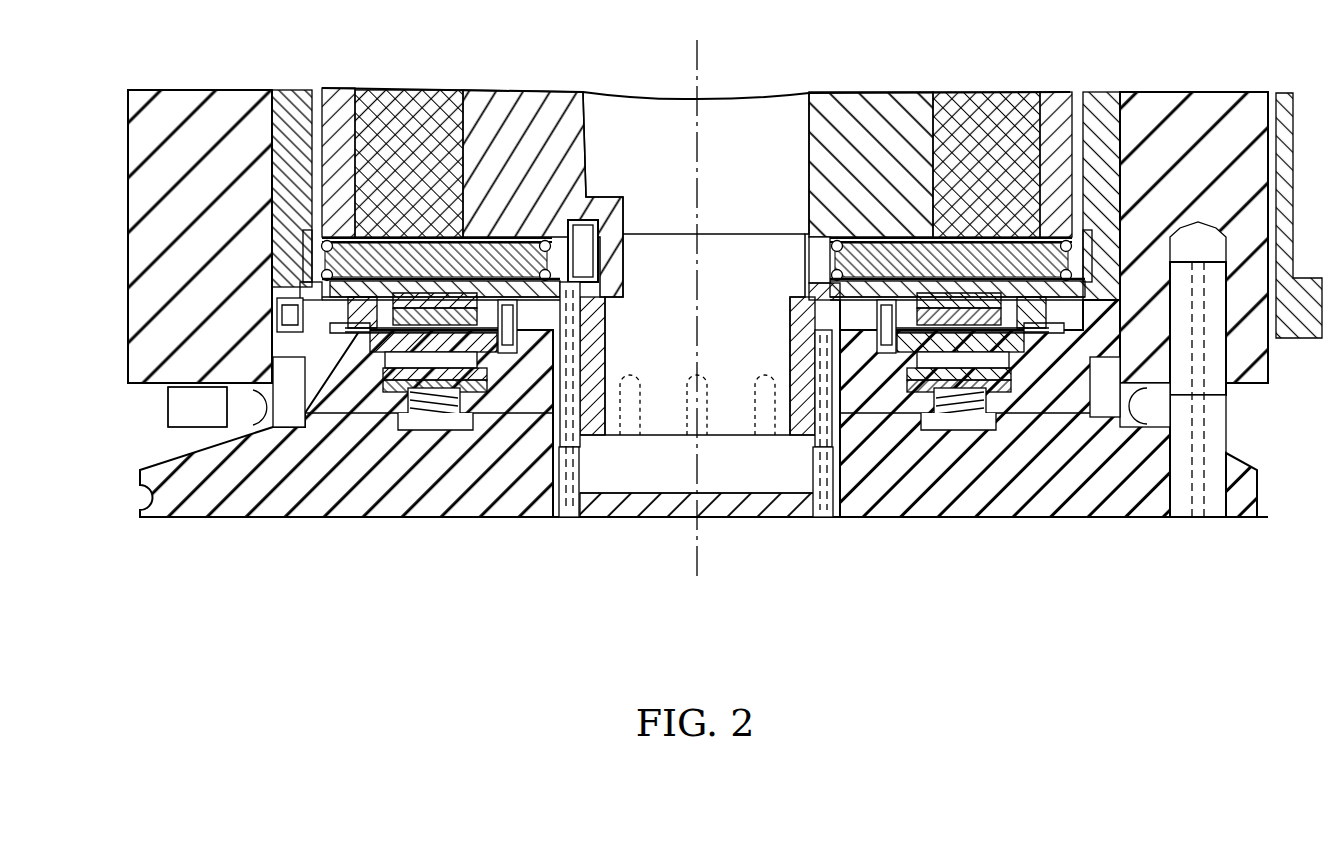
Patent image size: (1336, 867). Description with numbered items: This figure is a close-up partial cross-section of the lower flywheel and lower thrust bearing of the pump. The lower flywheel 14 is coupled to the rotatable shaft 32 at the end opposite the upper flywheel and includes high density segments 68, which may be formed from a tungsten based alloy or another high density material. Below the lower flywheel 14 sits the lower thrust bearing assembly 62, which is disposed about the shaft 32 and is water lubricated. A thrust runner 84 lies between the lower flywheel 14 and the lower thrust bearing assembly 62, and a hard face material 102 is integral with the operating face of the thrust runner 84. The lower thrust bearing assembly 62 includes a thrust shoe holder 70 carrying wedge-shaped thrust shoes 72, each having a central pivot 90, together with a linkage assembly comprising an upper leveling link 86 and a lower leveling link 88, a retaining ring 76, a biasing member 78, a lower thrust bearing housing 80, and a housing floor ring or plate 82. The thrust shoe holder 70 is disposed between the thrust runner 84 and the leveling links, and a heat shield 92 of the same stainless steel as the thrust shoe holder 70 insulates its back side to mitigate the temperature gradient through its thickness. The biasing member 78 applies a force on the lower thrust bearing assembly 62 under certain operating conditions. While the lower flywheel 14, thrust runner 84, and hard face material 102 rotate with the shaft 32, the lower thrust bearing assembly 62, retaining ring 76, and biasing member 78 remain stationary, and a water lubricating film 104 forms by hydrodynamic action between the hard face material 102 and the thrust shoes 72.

The lower flywheel 14 is at (878, 108).
The shaft 32 is at (740, 108).
The lower thrust bearing assembly 62 is at (290, 388).
The high density segments 68 is at (1005, 108).
The thrust shoe holder 70 is at (315, 368).
The wedge-shaped thrust shoes 72 is at (362, 310).
The retaining ring 76 is at (392, 345).
The biasing member 78 is at (437, 428).
The lower thrust bearing housing 80 is at (278, 418).
The housing floor ring or plate 82 is at (457, 437).
The thrust runner 84 is at (350, 258).
The upper leveling link 86 is at (275, 442).
The lower leveling link 88 is at (335, 430).
The central pivot 90 is at (470, 370).
The heat shield 92 is at (500, 300).
The hard face material 102 is at (512, 292).
The water lubricating film 104 is at (583, 222).